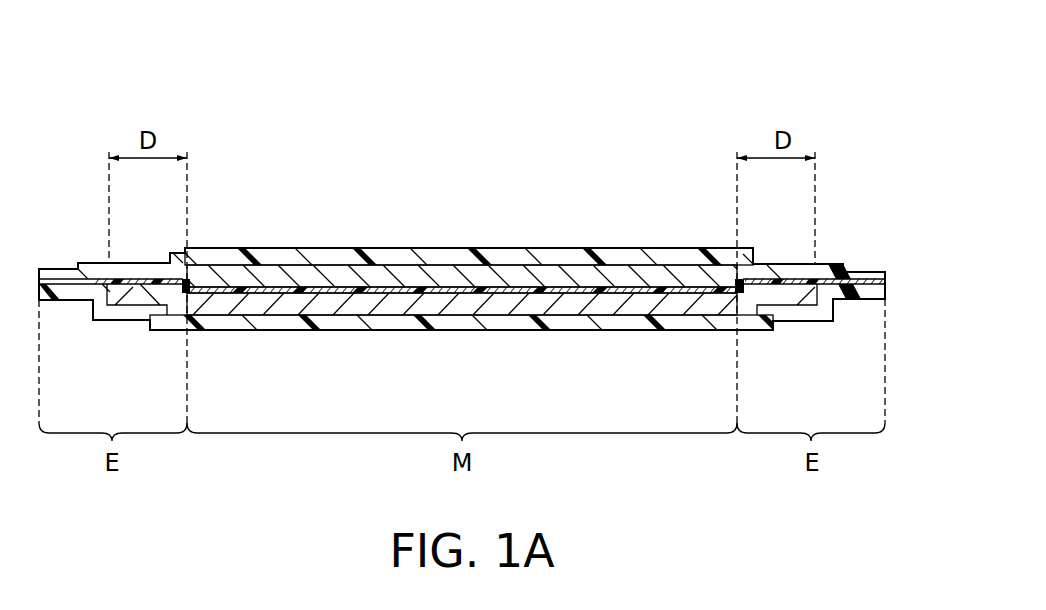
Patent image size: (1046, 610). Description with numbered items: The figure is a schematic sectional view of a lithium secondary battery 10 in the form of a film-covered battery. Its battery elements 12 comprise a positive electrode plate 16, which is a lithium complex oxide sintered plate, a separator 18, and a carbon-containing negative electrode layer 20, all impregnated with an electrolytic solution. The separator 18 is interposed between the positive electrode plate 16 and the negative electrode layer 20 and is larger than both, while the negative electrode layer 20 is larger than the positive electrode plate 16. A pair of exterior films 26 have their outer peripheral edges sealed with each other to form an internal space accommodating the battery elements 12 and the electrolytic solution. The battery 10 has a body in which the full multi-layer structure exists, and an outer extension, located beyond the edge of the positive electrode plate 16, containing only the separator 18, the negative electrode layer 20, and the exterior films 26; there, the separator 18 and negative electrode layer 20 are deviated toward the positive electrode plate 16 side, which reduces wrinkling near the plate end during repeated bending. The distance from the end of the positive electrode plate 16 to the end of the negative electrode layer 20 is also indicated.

The lithium secondary battery 10 is at (462, 211).
The battery elements 12 is at (463, 200).
The positive electrode plate 16 is at (507, 278).
The separator 18 is at (568, 289).
The negative electrode layer 20 is at (470, 130).
The exterior films 26 is at (270, 257).